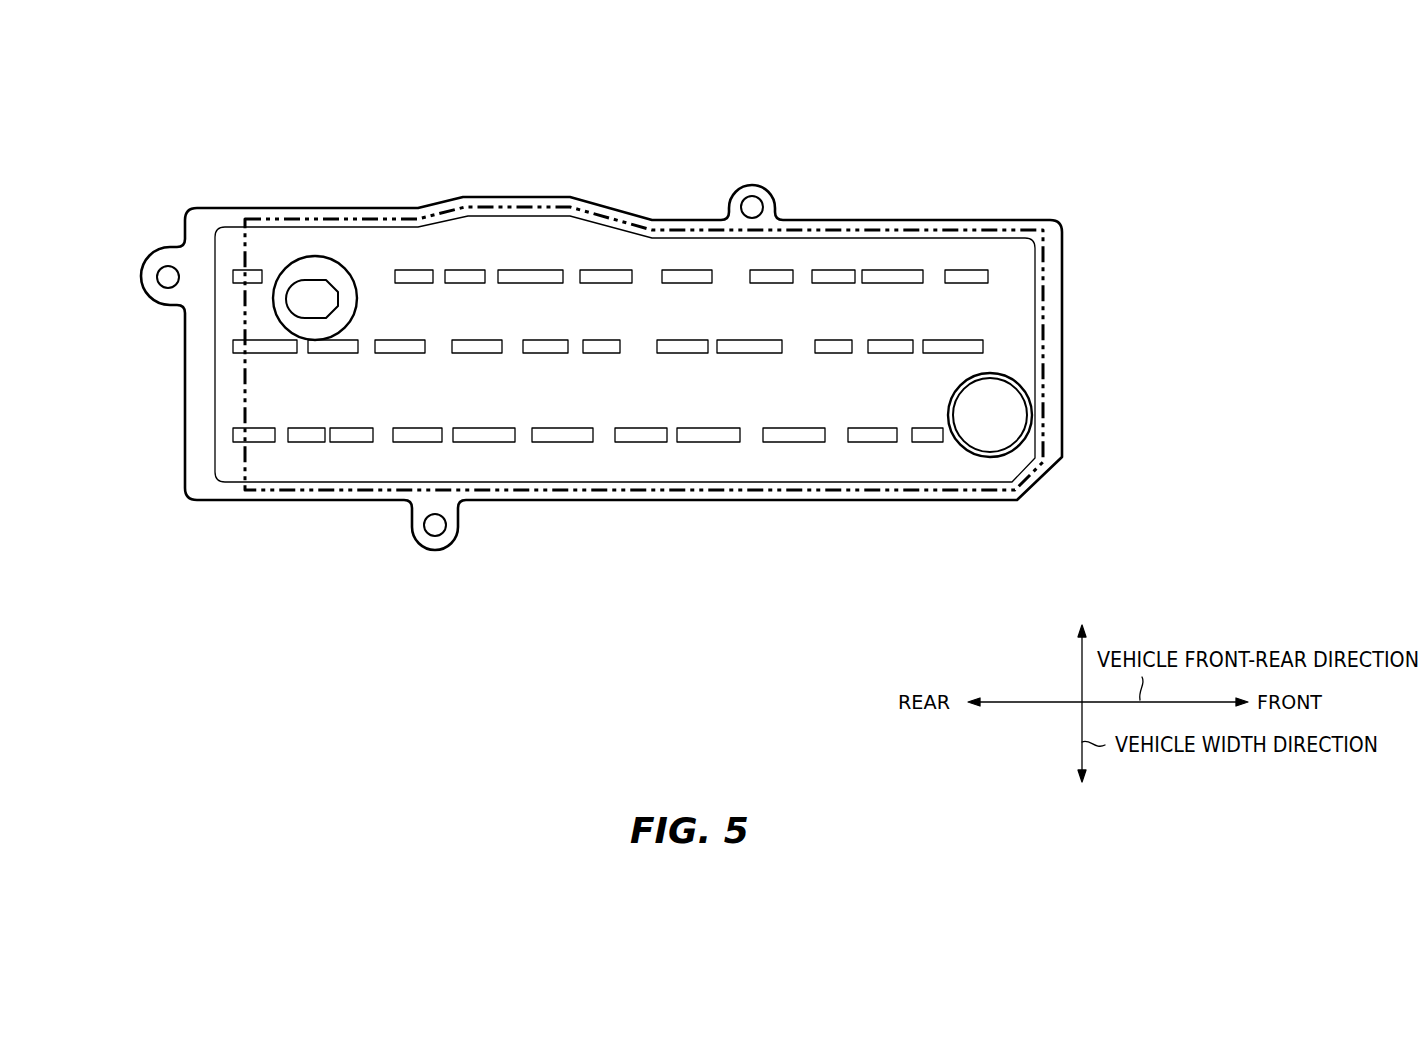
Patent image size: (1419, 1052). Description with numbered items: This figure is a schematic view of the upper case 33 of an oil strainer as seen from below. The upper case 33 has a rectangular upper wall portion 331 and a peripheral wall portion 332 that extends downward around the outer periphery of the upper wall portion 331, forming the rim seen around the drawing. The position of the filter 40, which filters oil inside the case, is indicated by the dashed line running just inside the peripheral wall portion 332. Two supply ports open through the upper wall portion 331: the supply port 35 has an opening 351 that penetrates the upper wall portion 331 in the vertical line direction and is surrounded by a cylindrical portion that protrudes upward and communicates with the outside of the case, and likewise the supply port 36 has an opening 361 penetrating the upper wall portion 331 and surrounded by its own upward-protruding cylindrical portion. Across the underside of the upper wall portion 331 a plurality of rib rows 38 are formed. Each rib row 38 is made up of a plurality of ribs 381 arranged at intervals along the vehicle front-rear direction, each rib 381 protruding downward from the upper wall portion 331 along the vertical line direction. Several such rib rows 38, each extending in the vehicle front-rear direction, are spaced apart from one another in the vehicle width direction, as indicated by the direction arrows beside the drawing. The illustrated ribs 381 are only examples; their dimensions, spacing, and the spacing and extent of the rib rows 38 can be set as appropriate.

The upper case 33 is at (677, 145).
The upper wall portion 331 is at (503, 243).
The peripheral wall portion 332 is at (197, 393).
The supply port 35 is at (1025, 448).
The opening 351 is at (985, 438).
The supply port 36 is at (285, 260).
The opening 361 is at (330, 302).
The rib row 38 is at (995, 277).
The rib 381 is at (600, 276).
The filter 40 is at (805, 230).